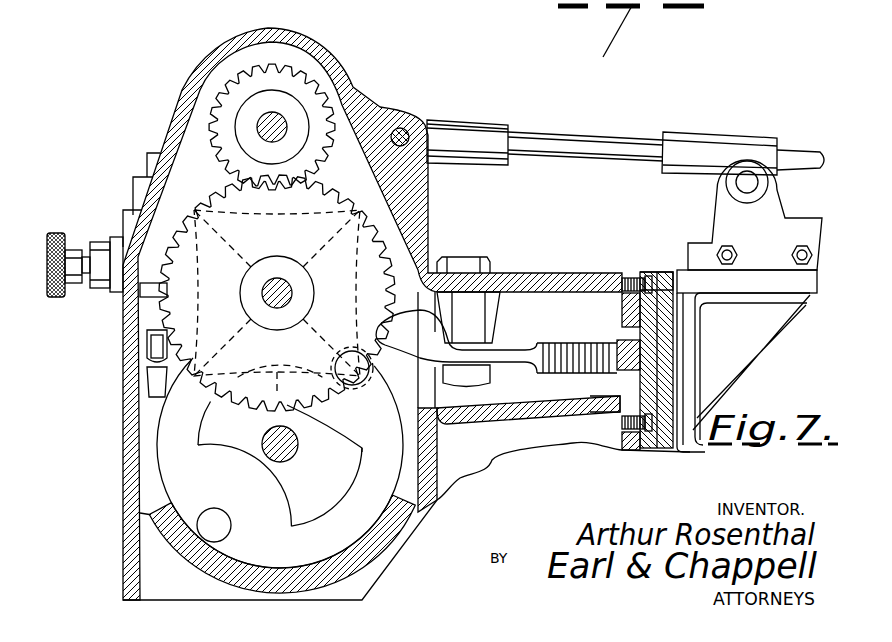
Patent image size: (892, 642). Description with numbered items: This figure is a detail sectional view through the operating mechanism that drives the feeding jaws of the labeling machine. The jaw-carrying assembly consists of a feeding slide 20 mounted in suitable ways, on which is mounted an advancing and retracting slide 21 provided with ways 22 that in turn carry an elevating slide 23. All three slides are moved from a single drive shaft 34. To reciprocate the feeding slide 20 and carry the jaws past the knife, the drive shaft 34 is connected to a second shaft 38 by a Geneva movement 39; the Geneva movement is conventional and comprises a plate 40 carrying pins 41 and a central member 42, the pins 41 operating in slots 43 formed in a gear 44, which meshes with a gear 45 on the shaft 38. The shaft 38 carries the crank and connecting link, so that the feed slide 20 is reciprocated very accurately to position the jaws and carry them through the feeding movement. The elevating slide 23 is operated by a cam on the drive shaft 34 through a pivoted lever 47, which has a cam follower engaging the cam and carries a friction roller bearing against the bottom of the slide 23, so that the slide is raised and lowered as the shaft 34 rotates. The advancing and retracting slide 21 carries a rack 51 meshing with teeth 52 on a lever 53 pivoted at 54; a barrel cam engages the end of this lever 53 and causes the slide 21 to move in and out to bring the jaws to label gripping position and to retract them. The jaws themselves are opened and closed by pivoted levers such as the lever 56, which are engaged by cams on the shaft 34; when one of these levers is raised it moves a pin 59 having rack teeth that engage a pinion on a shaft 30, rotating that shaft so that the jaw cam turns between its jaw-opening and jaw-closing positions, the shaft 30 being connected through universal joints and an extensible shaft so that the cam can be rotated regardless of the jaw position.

The feeding slide 20 is at (717, 213).
The advancing and retracting slide 21 is at (662, 277).
The ways 22 is at (650, 397).
The elevating slide 23 is at (686, 380).
The shaft 30 is at (88, 283).
The drive shaft 34 is at (275, 461).
The shaft 38 is at (279, 118).
The Geneva movement 39 is at (350, 206).
The plate 40 is at (367, 517).
The pins 41 is at (226, 527).
The central member 42 is at (306, 507).
The slots 43 is at (211, 380).
The gear 44 is at (280, 465).
The gear 45 is at (312, 95).
The lever 47 is at (507, 343).
The rack 51 is at (607, 410).
The teeth 52 is at (587, 345).
The lever 53 is at (453, 358).
The pivot 54 is at (480, 378).
The lever 56 is at (150, 392).
The pin 59 is at (150, 346).